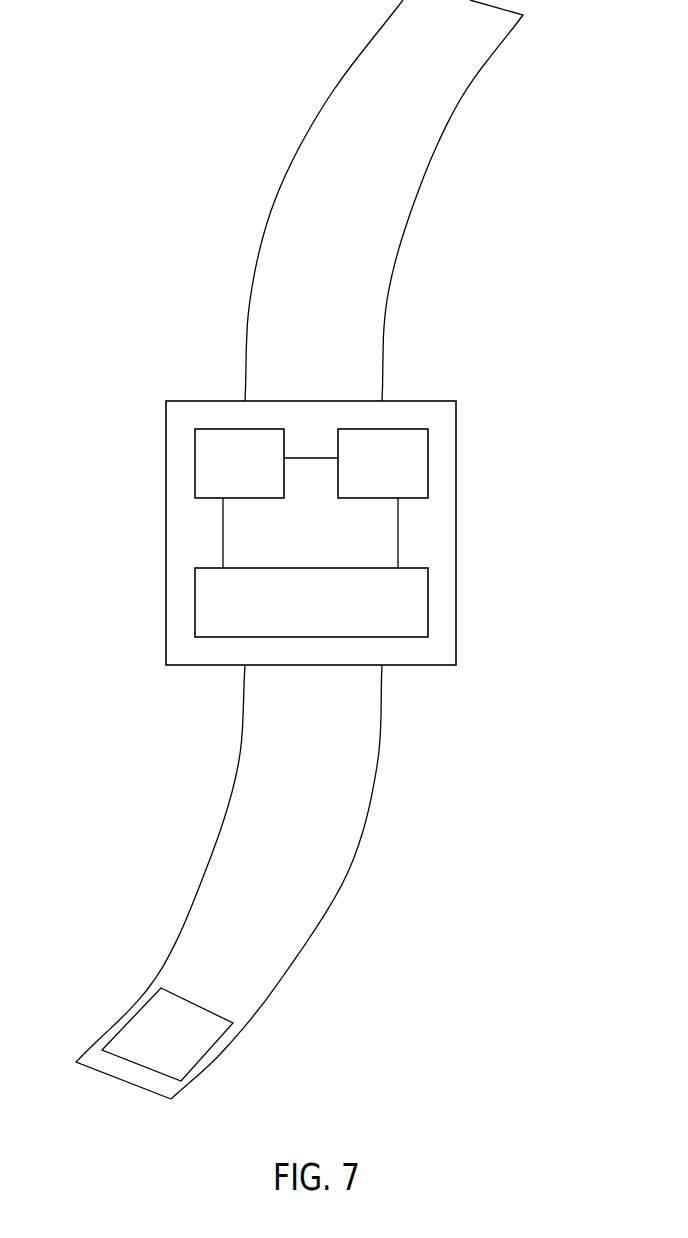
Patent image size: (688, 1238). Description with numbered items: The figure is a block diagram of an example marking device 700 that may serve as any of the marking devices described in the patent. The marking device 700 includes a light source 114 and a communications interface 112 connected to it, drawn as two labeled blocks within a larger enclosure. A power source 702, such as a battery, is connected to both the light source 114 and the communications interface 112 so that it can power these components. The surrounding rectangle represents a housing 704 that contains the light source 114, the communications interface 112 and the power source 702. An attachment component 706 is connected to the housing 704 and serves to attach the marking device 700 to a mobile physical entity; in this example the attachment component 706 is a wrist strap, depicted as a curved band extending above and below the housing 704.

The marking device 700 is at (82, 126).
The attachment component 706 is at (266, 228).
The housing 704 is at (458, 432).
The power source 702 is at (428, 462).
The light source 114 is at (195, 463).
The communications interface 112 is at (195, 603).